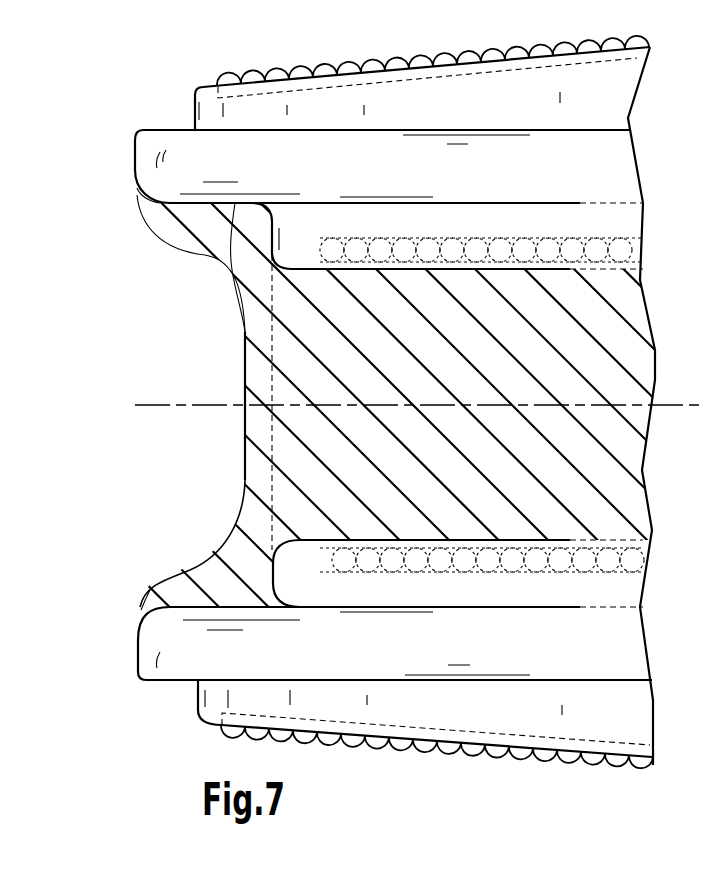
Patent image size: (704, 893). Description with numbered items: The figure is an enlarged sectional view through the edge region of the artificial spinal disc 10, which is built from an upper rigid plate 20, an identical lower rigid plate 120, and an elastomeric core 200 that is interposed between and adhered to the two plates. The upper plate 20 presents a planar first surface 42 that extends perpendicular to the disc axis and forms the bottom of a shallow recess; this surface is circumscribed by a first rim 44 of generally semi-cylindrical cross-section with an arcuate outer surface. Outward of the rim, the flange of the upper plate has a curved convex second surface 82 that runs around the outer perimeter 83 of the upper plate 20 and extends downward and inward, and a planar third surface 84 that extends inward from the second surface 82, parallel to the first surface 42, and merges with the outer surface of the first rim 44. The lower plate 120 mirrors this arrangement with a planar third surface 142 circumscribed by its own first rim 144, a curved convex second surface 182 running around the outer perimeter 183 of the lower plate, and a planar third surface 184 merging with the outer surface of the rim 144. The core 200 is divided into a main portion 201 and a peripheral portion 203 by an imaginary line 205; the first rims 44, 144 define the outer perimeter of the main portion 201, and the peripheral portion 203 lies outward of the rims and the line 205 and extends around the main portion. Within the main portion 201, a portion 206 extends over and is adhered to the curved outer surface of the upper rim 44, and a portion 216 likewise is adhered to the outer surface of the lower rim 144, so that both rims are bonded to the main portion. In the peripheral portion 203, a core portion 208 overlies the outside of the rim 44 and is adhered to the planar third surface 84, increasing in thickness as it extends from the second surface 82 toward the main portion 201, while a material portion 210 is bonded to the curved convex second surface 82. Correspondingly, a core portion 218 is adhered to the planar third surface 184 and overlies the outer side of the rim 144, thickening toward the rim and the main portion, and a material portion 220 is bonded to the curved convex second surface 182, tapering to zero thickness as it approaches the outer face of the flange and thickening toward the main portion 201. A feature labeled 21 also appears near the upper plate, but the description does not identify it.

The spinal disc 10 is at (134, 451).
The upper rigid plate 20 is at (178, 110).
The upper plate inner surface 21 is at (642, 219).
The first surface 42 is at (587, 250).
The first rim 44 is at (293, 258).
The curved convex second surface 82 is at (137, 198).
The outer perimeter 83 is at (135, 148).
The planar third surface 84 is at (228, 258).
The lower rigid plate 120 is at (169, 715).
The third surface 142 is at (612, 558).
The first rim 144 is at (293, 567).
The curved convex second surface 182 is at (143, 612).
The outer perimeter 183 is at (140, 660).
The planar third surface 184 is at (168, 606).
The elastomeric core 200 is at (234, 419).
The main portion 201 is at (297, 457).
The peripheral portion 203 is at (250, 372).
The imaginary line 205 is at (272, 345).
The portion of the main portion 206 is at (283, 283).
The core portion 208 is at (198, 220).
The material portion 210 is at (150, 212).
The portion of the main portion 216 is at (285, 532).
The core portion 218 is at (227, 597).
The material portion 220 is at (152, 615).